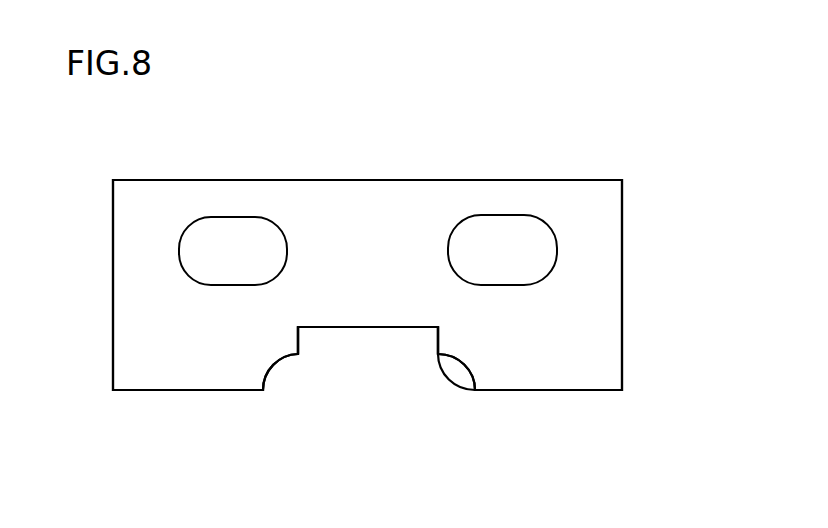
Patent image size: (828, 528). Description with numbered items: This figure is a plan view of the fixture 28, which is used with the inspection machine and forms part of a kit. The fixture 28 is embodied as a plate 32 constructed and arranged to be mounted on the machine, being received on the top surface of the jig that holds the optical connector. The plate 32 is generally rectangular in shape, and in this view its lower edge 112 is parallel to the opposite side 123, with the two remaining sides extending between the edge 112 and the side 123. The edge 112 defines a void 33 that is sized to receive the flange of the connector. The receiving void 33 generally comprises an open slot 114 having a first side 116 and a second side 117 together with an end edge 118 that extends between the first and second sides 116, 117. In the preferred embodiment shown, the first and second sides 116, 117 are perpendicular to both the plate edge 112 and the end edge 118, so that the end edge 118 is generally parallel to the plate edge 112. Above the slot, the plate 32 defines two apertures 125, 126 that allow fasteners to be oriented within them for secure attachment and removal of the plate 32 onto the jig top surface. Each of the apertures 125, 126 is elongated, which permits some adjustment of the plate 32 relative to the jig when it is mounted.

The fixture 28 is at (353, 100).
The plate 32 is at (607, 200).
The void 33 is at (437, 350).
The edge 112 is at (162, 390).
The open slot 114 is at (353, 408).
The first side 116 is at (298, 355).
The second side 117 is at (438, 343).
The end edge 118 is at (368, 327).
The side 123 is at (355, 180).
The aperture 125 is at (222, 217).
The aperture 126 is at (488, 216).